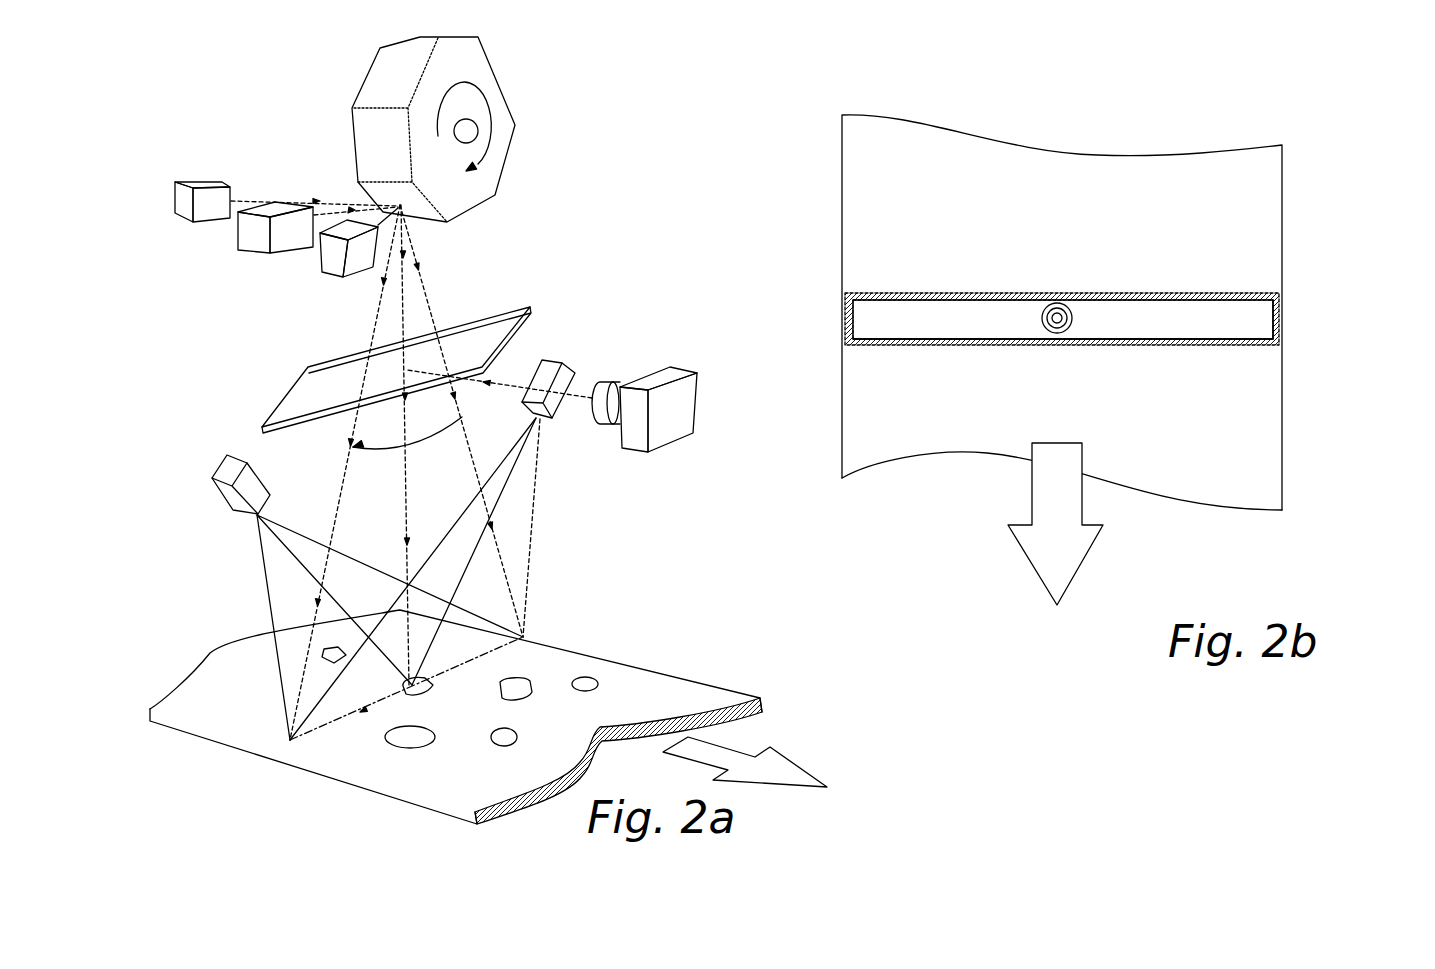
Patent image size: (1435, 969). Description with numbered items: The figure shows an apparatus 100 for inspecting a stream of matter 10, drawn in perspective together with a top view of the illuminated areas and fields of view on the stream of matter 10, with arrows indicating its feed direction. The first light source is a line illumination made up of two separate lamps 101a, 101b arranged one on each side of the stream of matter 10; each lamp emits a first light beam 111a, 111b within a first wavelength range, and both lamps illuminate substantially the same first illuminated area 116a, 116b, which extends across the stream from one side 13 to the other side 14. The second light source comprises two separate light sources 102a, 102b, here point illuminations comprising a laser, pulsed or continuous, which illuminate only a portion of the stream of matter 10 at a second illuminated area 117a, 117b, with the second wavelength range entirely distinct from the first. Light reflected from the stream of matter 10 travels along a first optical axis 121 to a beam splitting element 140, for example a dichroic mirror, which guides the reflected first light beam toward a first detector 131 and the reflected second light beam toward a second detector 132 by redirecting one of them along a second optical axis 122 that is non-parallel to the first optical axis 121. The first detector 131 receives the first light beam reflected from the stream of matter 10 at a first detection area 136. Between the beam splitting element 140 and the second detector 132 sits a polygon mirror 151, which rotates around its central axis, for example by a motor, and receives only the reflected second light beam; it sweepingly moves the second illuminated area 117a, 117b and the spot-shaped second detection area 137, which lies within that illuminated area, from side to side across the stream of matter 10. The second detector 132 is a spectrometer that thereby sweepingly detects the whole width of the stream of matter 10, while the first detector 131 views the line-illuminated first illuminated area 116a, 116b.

In FIG. 2A, the apparatus 100 is at (645, 68).
In FIG. 2A, the polygon mirror 151 is at (490, 78).
In FIG. 2A, the second light source 102a is at (205, 185).
In FIG. 2A, the second detector 132 is at (252, 235).
In FIG. 2A, the second light source 102b is at (327, 263).
In FIG. 2A, the beam splitting element 140 is at (510, 310).
In FIG. 2A, the second optical axis 122 is at (500, 387).
In FIG. 2A, the lamp 101b is at (553, 360).
In FIG. 2A, the first light beam 111b is at (507, 485).
In FIG. 2A, the first detector 131 is at (680, 407).
In FIG. 2A, the lamp 101a is at (228, 472).
In FIG. 2A, the first light beam 111a is at (297, 553).
In FIG. 2A, the first optical axis 121 is at (412, 482).
In FIG. 2A, the side of the stream of matter 13 is at (531, 628).
In FIG. 2B, the side of the stream of matter 13 is at (1292, 318).
In FIG. 2A, the side of the stream of matter 14 is at (280, 750).
In FIG. 2B, the side of the stream of matter 14 is at (834, 320).
In FIG. 2A, the stream of matter 10 is at (430, 692).
In FIG. 2B, the first illuminated area 116a is at (1222, 293).
In FIG. 2B, the first illuminated area 116b is at (1063, 319).
In FIG. 2B, the second illuminated area 117a is at (1056, 302).
In FIG. 2B, the second illuminated area 117b is at (1058, 327).
In FIG. 2B, the second detection area 137 is at (1057, 333).
In FIG. 2B, the first detection area 136 is at (1223, 342).